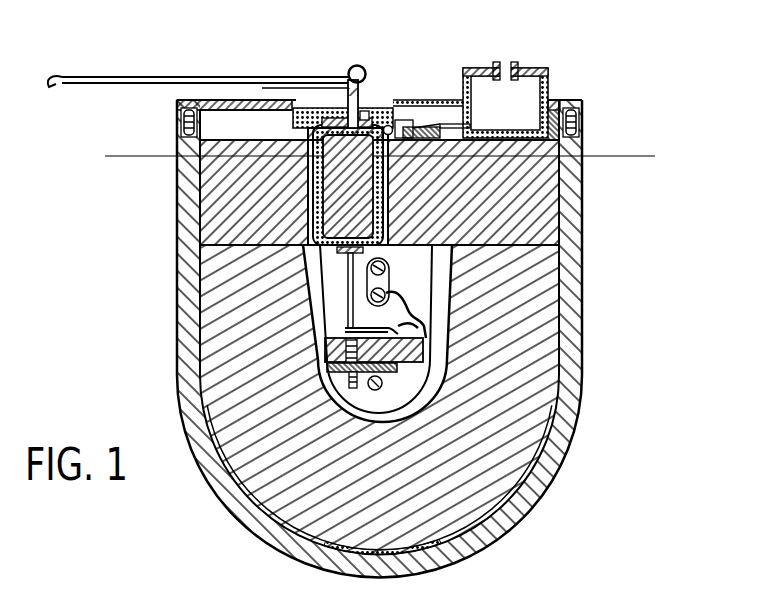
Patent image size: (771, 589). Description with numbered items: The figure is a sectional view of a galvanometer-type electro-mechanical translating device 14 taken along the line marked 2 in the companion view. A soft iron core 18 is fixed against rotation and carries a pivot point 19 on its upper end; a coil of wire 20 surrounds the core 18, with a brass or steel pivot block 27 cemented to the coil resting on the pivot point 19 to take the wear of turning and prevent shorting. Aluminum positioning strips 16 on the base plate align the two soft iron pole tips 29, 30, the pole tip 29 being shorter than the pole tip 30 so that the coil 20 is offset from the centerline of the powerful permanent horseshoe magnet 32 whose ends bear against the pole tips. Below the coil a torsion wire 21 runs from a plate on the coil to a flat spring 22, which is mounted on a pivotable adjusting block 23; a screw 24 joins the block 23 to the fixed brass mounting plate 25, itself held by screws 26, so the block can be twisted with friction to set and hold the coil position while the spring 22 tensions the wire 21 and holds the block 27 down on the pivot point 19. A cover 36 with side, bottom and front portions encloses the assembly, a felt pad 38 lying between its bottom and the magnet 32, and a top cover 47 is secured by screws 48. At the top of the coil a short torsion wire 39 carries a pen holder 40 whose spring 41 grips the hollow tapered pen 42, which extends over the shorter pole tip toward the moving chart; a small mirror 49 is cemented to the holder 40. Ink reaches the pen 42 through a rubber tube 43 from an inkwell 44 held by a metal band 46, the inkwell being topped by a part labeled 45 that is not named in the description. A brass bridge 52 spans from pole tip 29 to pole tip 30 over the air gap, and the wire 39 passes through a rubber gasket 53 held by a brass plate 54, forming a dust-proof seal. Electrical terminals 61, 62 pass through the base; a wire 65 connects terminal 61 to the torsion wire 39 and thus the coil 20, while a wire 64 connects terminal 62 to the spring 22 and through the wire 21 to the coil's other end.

The section line 2- 2 is at (105, 156).
The electro-mechanical translating device 14 is at (166, 278).
The positioning strips 16 is at (404, 115).
The soft iron core 18 is at (348, 194).
The pivot point 19 is at (348, 185).
The coil of wire 20 is at (320, 116).
The torsion wire 21 is at (347, 291).
The flat spring 22 is at (350, 322).
The pivotable adjusting block 23 is at (412, 362).
The screw 24 is at (348, 330).
The brass mounting plate 25 is at (392, 372).
The screws 26 is at (374, 390).
The pivot block 27 is at (322, 110).
The pole tip 29 is at (207, 182).
The pole tip 30 is at (543, 222).
The permanent horseshoe magnet 32 is at (552, 362).
The cover 36 is at (558, 468).
The felt pad 38 is at (428, 547).
The short torsion wire 39 is at (349, 106).
The pen holder 40 is at (358, 80).
The spring 41 is at (351, 66).
The pen 42 is at (122, 77).
The rubber tube 43 is at (420, 126).
The inkwell 44 is at (545, 80).
The plug 45 is at (500, 61).
The metal band 46 is at (560, 105).
The top cover 47 is at (200, 100).
The screws 48 is at (183, 118).
The mirror 49 is at (366, 114).
The brass bridge 52 is at (280, 133).
The rubber gasket 53 is at (387, 124).
The brass plate 54 is at (340, 118).
The electrical terminal 61 is at (401, 120).
The electrical terminal 62 is at (378, 303).
The wire 64 is at (402, 318).
The wire 65 is at (372, 118).